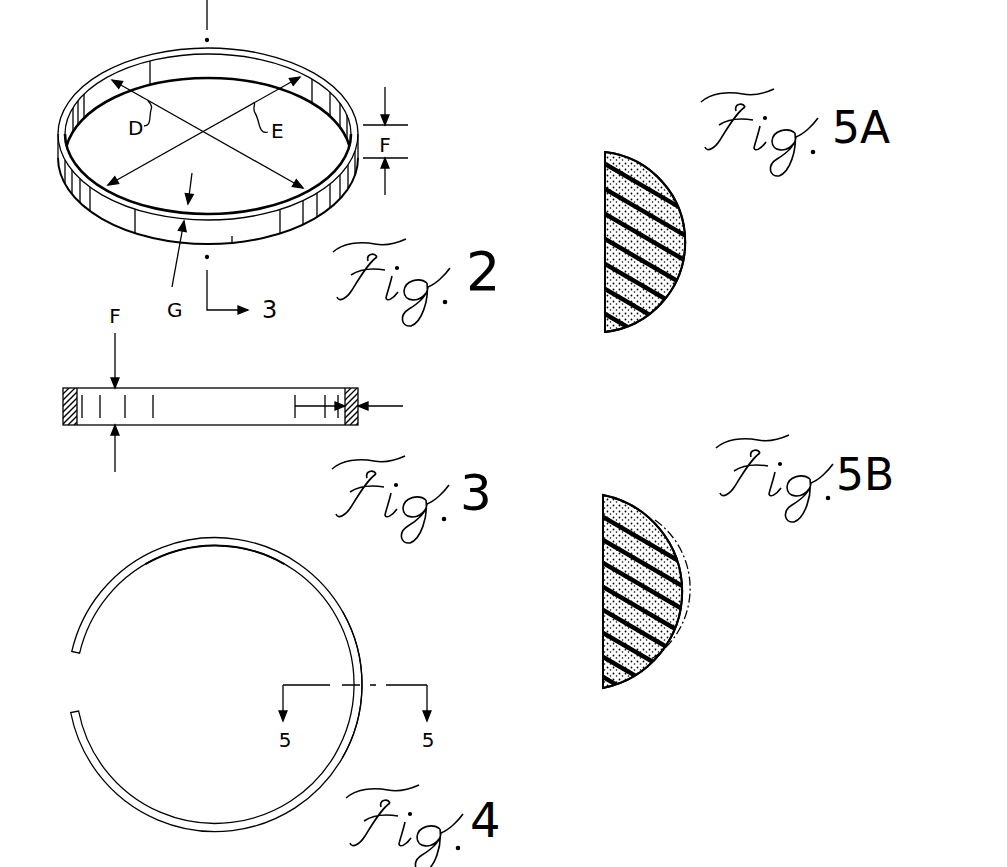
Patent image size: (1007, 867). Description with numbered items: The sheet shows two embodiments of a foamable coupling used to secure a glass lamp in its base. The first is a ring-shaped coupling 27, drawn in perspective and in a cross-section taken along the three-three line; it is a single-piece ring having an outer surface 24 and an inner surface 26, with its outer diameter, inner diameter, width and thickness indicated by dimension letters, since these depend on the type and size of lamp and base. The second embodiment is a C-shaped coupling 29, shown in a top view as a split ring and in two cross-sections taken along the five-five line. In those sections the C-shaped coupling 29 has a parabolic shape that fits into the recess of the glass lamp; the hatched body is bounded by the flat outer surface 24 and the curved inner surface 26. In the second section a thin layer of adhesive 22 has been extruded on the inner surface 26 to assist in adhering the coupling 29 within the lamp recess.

In FIG. 5B, the adhesive layer 22 is at (687, 585).
In FIG. 2, the outer surface 24 is at (102, 210).
In FIG. 4, the outer surface 24 is at (217, 540).
In FIG. 5A, the outer surface 24 is at (603, 237).
In FIG. 5B, the outer surface 24 is at (603, 642).
In FIG. 2, the inner surface 26 is at (163, 65).
In FIG. 4, the inner surface 26 is at (184, 546).
In FIG. 5A, the inner surface 26 is at (681, 210).
In FIG. 5B, the inner surface 26 is at (615, 677).
In FIG. 2, the ring-shaped coupling 27 is at (308, 55).
In FIG. 4, the C-shaped coupling 29 is at (363, 600).
In FIG. 5A, the C-shaped coupling 29 is at (692, 298).
In FIG. 5B, the C-shaped coupling 29 is at (690, 660).